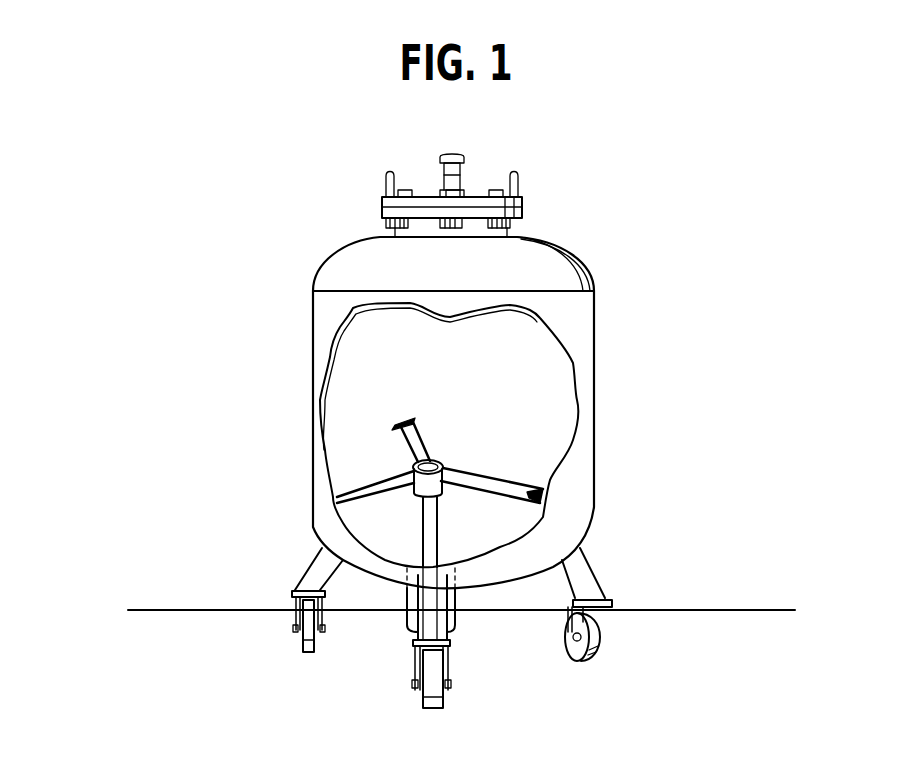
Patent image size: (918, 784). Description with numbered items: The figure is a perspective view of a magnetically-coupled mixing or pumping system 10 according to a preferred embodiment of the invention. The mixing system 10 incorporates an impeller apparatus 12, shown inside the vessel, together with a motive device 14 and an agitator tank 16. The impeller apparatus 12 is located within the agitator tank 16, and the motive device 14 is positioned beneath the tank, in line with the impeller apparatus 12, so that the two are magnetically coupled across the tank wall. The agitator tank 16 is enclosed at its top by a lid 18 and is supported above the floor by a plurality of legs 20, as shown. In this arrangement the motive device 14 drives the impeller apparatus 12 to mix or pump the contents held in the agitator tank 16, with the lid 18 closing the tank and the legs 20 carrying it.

The mixing system 10 is at (727, 302).
The impeller apparatus 12 is at (383, 520).
The motive device 14 is at (406, 597).
The agitator tank 16 is at (580, 485).
The lid 18 is at (472, 208).
The legs 20 is at (583, 578).